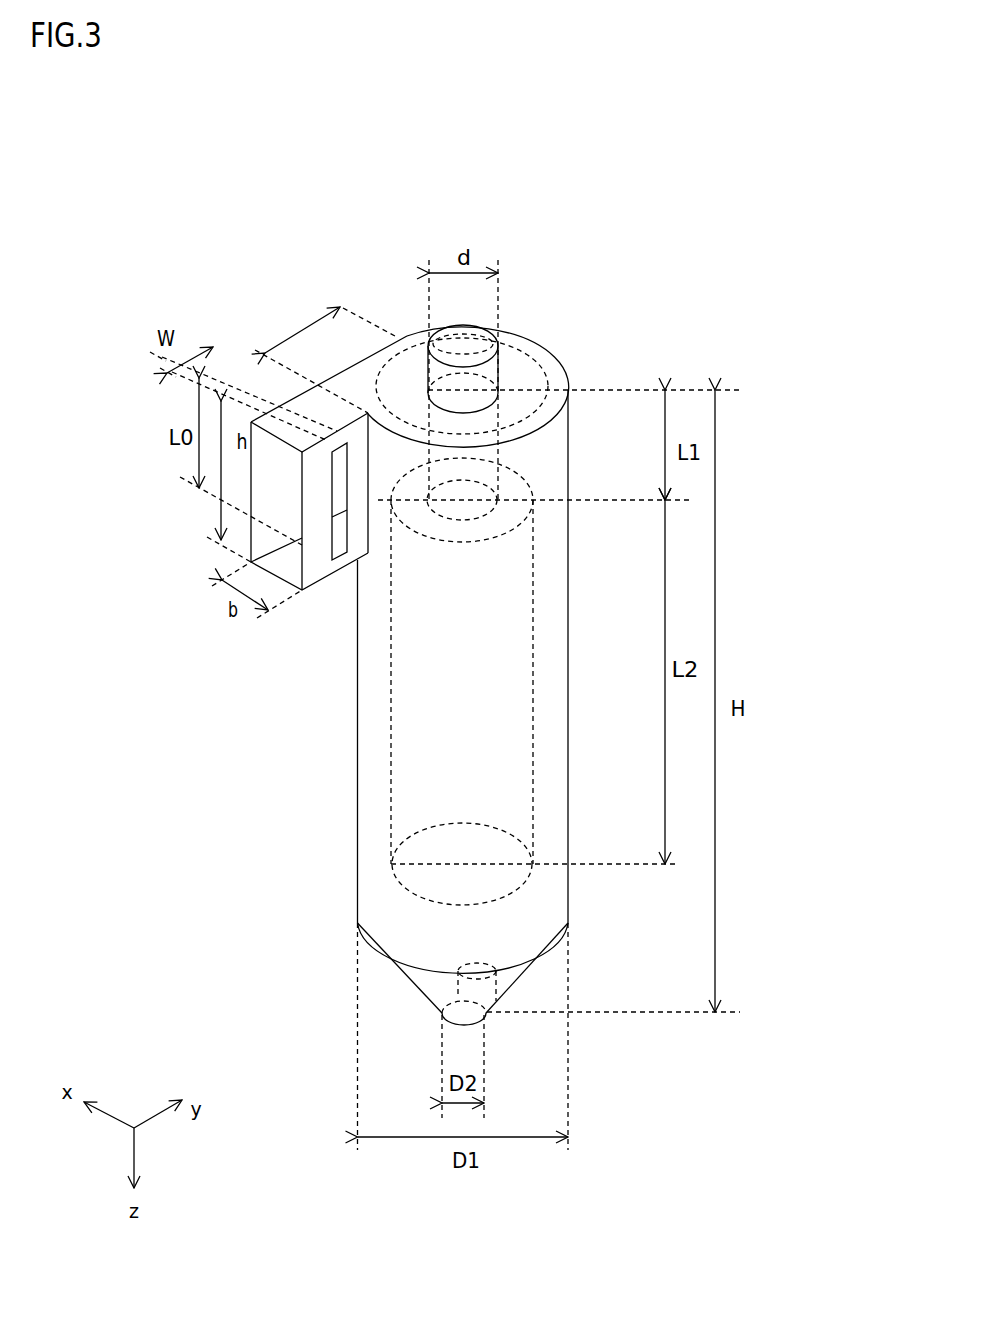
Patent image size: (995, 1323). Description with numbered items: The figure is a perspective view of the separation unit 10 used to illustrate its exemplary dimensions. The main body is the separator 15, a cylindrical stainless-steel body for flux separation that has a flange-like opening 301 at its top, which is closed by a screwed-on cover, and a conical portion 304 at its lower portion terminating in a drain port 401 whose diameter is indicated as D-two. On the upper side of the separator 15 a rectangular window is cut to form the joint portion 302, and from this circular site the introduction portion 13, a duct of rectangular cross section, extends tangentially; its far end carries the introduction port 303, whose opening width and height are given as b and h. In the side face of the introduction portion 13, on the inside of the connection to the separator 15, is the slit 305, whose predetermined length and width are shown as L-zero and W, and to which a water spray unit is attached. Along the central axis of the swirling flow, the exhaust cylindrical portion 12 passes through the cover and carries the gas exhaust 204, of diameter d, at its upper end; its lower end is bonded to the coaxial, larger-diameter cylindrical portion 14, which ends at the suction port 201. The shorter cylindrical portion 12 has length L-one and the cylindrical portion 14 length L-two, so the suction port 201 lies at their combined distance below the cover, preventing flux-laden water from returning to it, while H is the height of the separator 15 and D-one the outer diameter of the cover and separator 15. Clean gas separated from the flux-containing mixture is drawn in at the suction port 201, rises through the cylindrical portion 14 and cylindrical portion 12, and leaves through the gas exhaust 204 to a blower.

The separation unit 10 is at (226, 267).
The exhaust cylindrical portion 12 is at (505, 455).
The introduction portion 13 is at (318, 583).
The cylindrical portion 14 is at (533, 716).
The separator 15 is at (355, 765).
The suction port 201 is at (396, 883).
The gas exhaust 204 is at (493, 339).
The flange-like opening 301 is at (393, 357).
The joint portion 302 is at (298, 331).
The introduction port 303 is at (290, 568).
The conical portion 304 is at (420, 992).
The slit 305 is at (341, 551).
The drain port 401 is at (497, 1008).